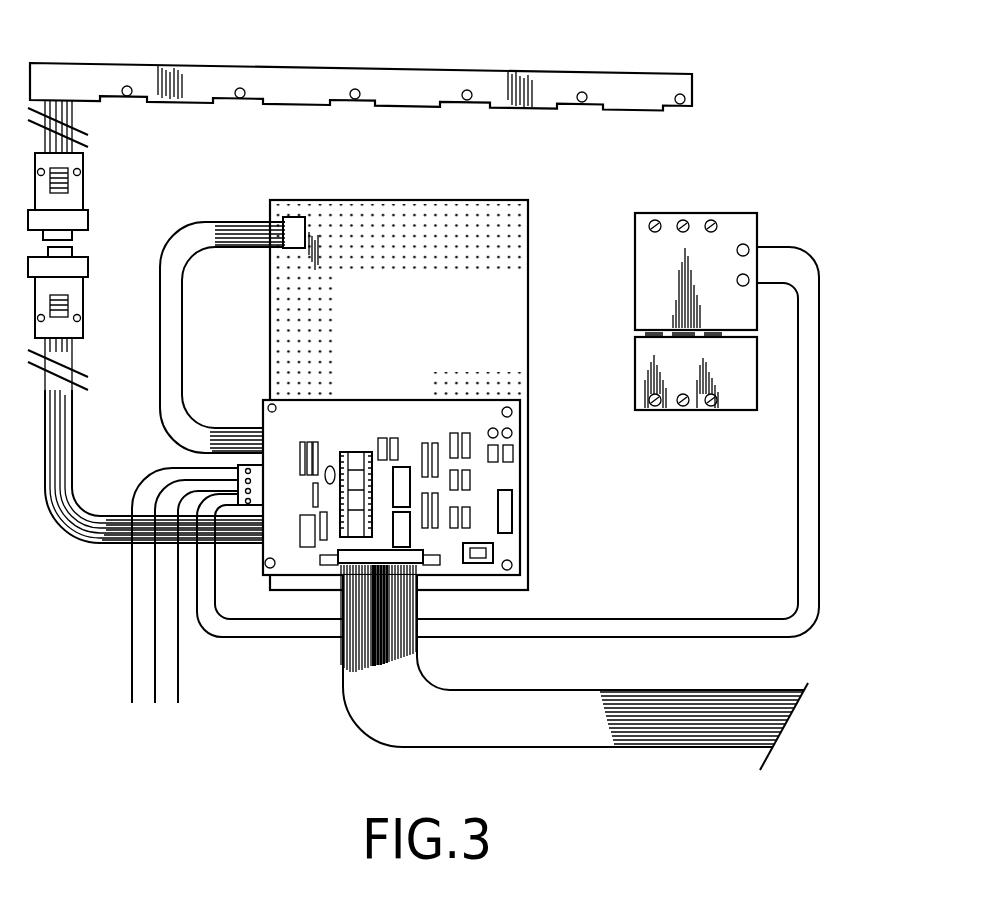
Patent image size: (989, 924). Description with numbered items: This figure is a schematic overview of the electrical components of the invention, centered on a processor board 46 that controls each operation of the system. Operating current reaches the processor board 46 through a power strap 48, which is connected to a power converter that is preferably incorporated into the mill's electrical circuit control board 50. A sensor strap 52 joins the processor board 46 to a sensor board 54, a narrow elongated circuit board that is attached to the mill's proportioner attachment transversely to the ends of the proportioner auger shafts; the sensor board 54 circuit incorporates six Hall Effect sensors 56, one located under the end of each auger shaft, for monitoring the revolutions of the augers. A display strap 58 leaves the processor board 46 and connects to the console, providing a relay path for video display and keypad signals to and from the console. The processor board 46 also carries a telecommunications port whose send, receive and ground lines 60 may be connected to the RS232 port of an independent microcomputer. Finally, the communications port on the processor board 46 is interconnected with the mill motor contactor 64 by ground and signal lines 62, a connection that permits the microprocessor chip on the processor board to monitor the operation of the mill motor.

The processor board 46 is at (507, 475).
The power strap 48 is at (180, 233).
The electrical circuit control board 50 is at (418, 202).
The sensor strap 52 is at (72, 528).
The sensor board 54 is at (182, 70).
The Hall Effect sensors 56 is at (582, 92).
The display strap 58 is at (378, 720).
The send, receive and ground lines 60 is at (188, 566).
The ground and signal lines 62 is at (257, 607).
The mill motor contactor 64 is at (727, 213).